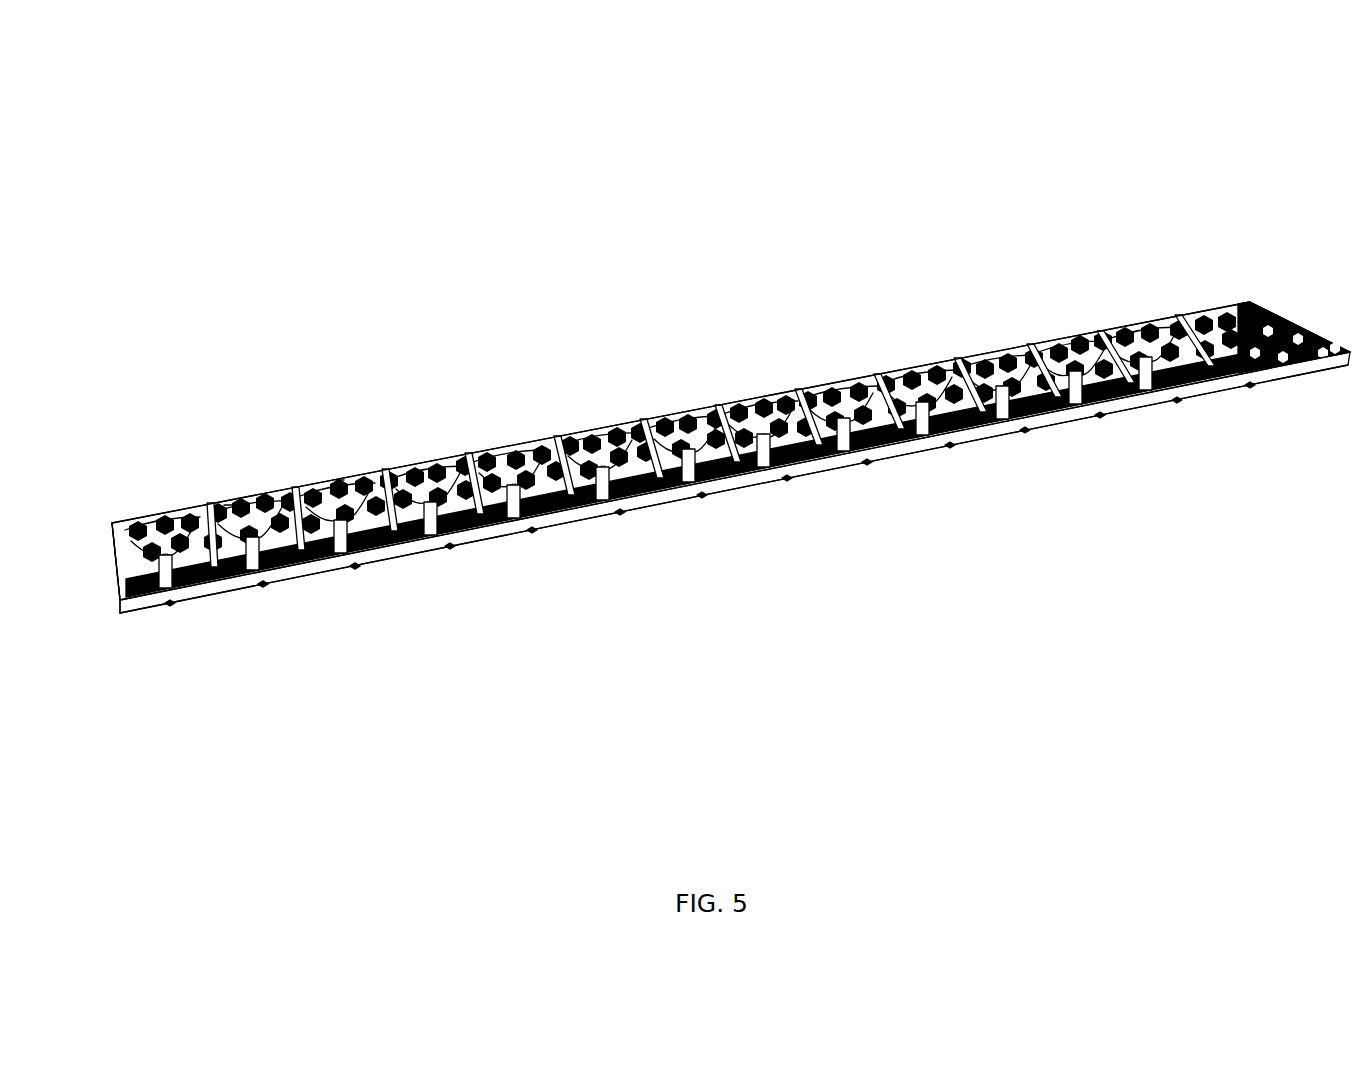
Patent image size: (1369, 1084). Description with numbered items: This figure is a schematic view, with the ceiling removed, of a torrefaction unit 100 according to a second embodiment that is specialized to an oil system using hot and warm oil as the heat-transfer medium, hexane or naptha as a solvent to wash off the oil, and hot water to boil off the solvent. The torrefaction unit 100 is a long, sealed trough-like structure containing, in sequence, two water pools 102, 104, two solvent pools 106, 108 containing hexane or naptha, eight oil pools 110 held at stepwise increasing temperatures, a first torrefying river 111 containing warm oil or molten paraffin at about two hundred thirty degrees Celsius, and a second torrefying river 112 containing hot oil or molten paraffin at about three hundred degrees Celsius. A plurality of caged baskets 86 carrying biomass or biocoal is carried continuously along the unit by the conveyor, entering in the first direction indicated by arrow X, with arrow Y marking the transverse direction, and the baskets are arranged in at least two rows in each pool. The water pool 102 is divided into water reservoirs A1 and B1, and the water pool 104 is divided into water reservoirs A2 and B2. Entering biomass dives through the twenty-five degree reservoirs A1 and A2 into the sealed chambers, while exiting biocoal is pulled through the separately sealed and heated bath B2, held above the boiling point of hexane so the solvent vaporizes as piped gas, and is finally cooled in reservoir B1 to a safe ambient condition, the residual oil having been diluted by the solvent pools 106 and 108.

The torrefaction unit 100 is at (1012, 170).
The water pool 102 is at (186, 502).
The water pool 104 is at (280, 482).
The solvent pool 106 is at (373, 460).
The solvent pool 108 is at (460, 447).
The oil pools 110 is at (562, 432).
The first torrefying river 111 is at (1162, 313).
The second torrefying river 112 is at (1278, 302).
The caged baskets 86 is at (960, 440).
The water reservoir A1 is at (263, 587).
The water reservoir A2 is at (355, 565).
The water reservoir B1 is at (227, 505).
The water reservoir B2 is at (340, 480).
The arrow X is at (113, 580).
The arrow Y is at (117, 558).